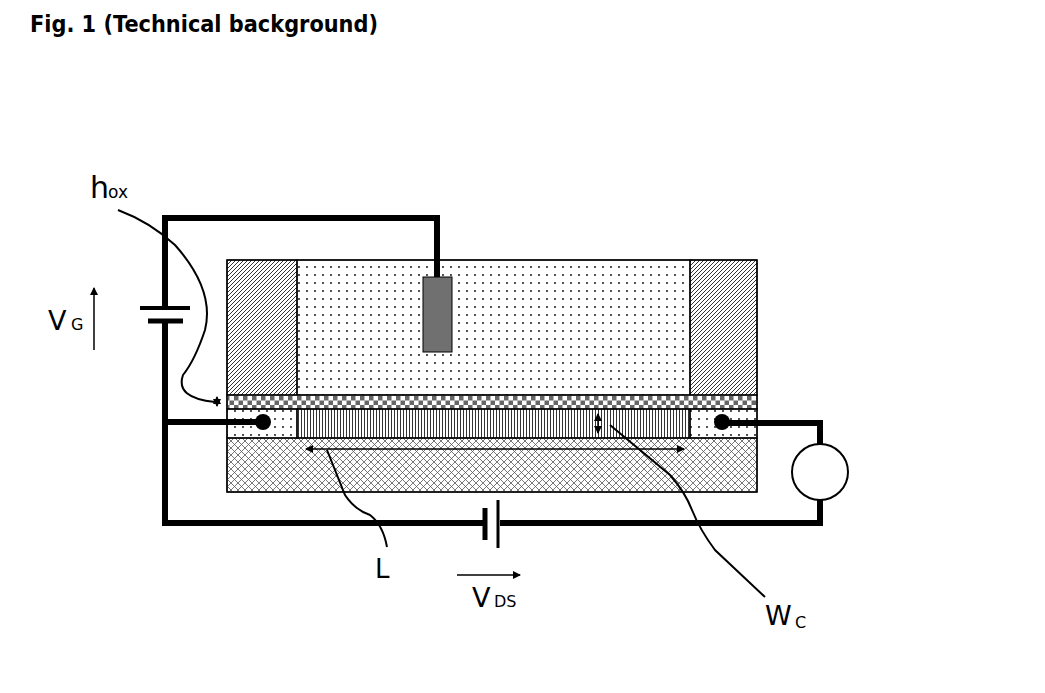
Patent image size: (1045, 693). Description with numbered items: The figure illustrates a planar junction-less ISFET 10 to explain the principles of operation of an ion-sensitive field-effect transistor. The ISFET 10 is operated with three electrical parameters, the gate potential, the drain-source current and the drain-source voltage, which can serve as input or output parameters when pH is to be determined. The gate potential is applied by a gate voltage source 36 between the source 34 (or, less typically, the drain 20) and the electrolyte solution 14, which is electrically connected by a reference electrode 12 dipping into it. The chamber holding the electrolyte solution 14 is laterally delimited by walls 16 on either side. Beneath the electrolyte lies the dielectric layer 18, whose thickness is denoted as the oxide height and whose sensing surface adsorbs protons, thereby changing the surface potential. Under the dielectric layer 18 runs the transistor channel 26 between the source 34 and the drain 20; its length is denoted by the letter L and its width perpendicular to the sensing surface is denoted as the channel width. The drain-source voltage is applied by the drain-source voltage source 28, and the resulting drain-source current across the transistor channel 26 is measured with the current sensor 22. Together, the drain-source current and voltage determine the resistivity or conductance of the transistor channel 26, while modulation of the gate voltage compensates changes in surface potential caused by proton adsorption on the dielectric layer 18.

The ISFET 10 is at (526, 154).
The reference electrode 12 is at (447, 318).
The electrolyte solution 14 is at (640, 275).
The walls 16 is at (718, 288).
The dielectric layer 18 is at (743, 398).
The drain 20 is at (747, 415).
The current sensor 22 is at (845, 482).
The transistor channel 26 is at (500, 428).
The drain-source voltage source 28 is at (502, 538).
The source 34 is at (248, 435).
The gate voltage source 36 is at (155, 327).